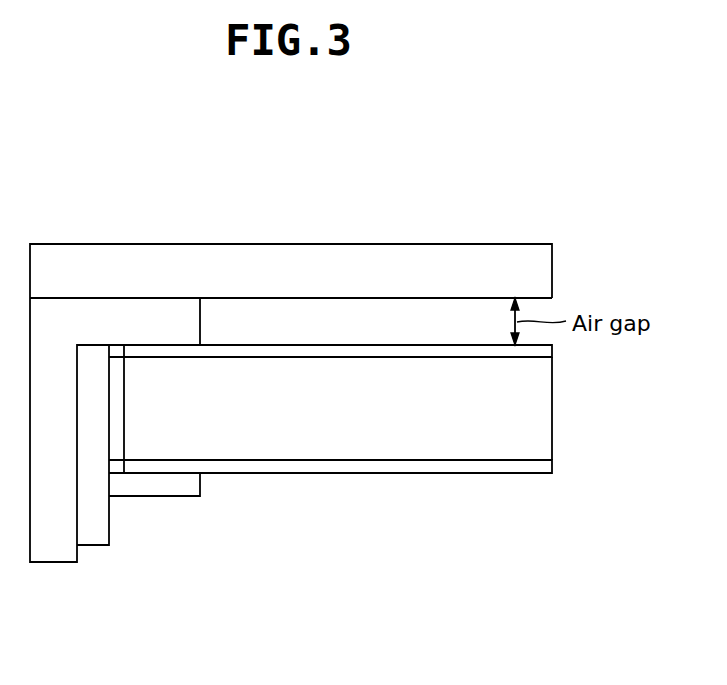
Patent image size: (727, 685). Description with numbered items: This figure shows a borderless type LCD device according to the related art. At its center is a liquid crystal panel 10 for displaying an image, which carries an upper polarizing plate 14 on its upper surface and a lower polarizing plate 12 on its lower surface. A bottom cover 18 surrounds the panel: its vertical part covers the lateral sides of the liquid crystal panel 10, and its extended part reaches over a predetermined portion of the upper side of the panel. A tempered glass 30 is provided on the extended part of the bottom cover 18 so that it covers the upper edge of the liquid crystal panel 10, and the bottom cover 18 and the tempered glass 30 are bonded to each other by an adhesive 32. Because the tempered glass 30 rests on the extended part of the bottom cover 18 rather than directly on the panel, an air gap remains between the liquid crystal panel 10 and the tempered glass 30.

The tempered glass 30 is at (542, 271).
The adhesive 32 is at (114, 298).
The bottom cover 18 is at (55, 563).
The upper polarizing plate 14 is at (545, 352).
The liquid crystal panel 10 is at (543, 410).
The lower polarizing plate 12 is at (545, 467).